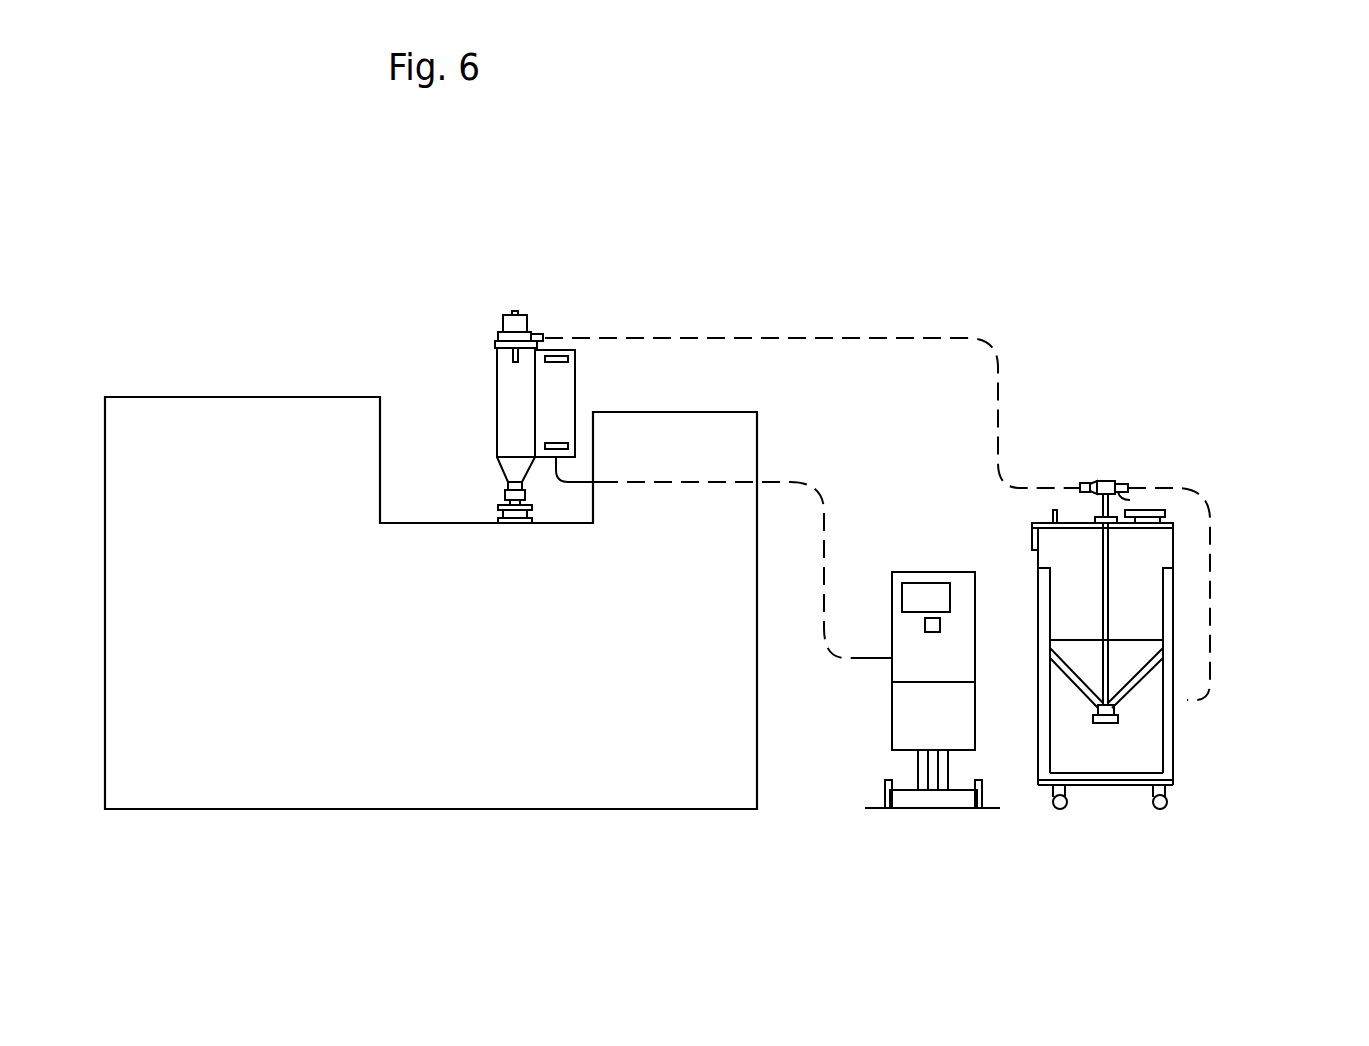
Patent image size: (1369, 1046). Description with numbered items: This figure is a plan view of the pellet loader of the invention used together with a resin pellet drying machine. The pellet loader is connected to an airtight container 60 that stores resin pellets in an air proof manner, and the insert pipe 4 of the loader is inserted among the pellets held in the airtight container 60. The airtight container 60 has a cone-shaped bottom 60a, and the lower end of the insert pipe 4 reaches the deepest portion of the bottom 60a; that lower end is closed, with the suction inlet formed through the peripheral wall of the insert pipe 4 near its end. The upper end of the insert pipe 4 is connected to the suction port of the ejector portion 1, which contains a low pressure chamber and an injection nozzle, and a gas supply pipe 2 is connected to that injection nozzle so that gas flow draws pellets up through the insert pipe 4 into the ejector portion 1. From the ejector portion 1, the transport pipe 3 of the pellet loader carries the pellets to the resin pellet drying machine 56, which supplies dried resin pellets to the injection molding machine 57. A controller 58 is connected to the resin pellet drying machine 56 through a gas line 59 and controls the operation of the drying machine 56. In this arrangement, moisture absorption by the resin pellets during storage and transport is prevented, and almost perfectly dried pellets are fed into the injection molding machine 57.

The ejector portion 1 is at (1108, 482).
The gas supply pipe 2 is at (1212, 556).
The transport pipe 3 is at (1000, 385).
The insert pipe 4 is at (1108, 560).
The resin pellet drying machine 56 is at (507, 385).
The injection molding machine 57 is at (230, 412).
The controller 58 is at (922, 572).
The gas line 59 is at (790, 480).
The airtight container 60 is at (1175, 745).
The cone-shaped bottom 60a is at (1143, 682).